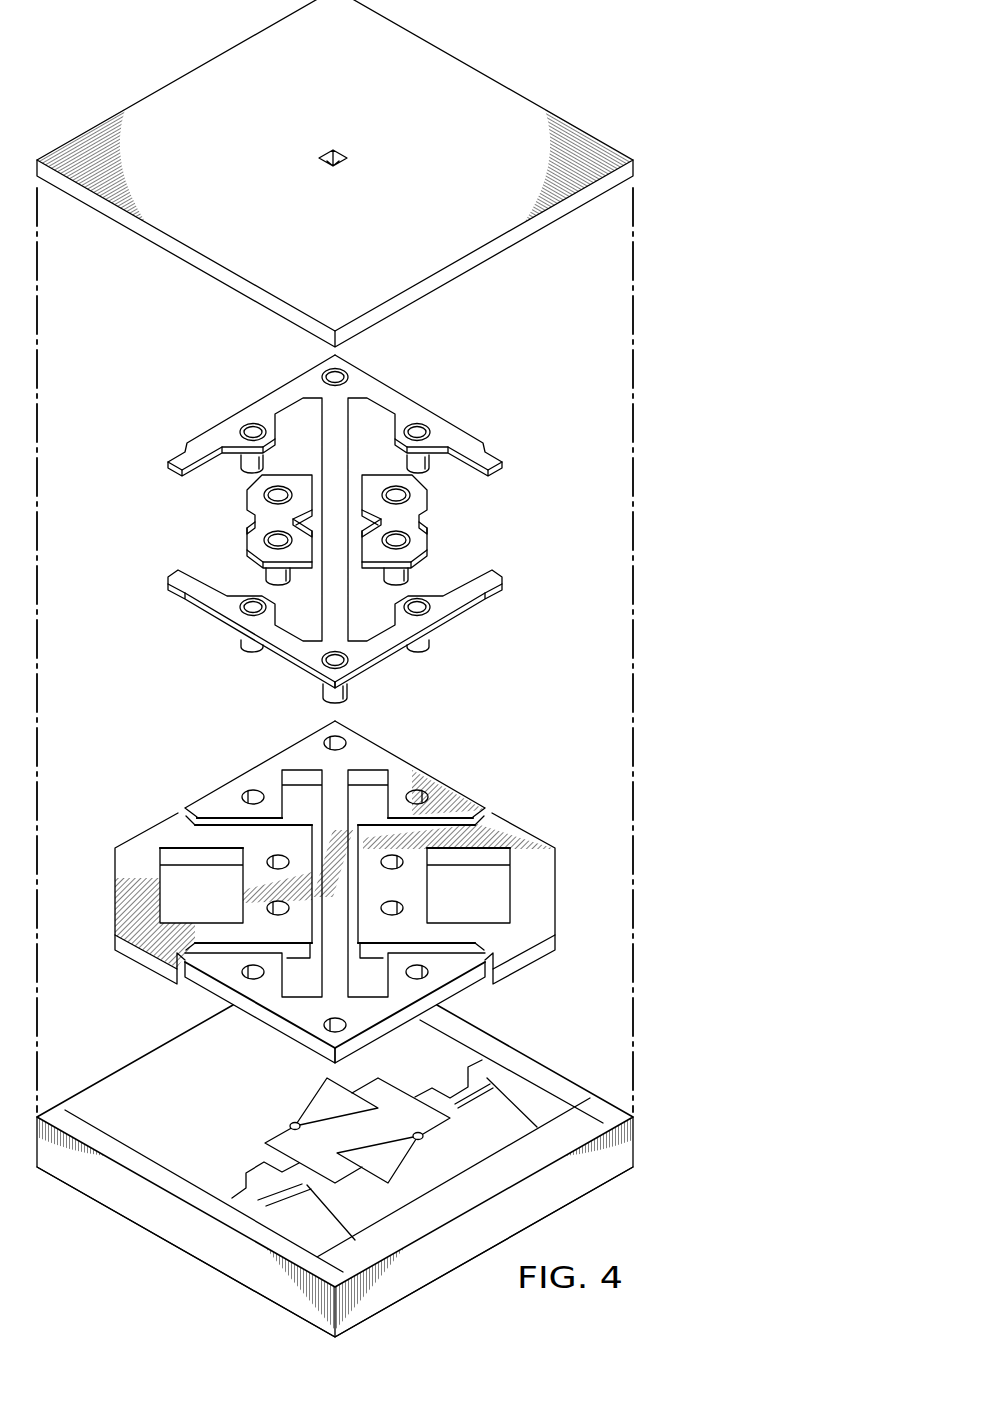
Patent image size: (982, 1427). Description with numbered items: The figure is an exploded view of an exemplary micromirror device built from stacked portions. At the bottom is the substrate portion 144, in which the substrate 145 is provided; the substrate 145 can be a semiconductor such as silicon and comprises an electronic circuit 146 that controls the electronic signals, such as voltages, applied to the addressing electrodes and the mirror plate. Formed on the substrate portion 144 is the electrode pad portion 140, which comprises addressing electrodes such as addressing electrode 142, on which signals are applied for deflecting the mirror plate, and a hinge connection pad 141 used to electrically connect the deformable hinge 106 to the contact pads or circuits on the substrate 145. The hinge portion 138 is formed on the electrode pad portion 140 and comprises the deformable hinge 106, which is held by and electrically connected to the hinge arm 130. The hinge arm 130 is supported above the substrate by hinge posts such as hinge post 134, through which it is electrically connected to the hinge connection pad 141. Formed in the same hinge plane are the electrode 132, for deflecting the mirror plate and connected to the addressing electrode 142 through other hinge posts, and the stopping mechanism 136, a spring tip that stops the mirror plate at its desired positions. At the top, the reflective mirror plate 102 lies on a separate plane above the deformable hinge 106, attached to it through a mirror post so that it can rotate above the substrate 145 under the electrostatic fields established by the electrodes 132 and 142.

The reflective mirror plate 102 is at (197, 77).
The hinge portion 138 is at (533, 22).
The hinge arm 130 is at (270, 401).
The electrode 132 is at (247, 500).
The hinge post 134 is at (323, 691).
The stopping mechanism 136 is at (468, 598).
The deformable hinge 106 is at (327, 621).
The electrode pad portion 140 is at (528, 805).
The hinge connection pad 141 is at (232, 791).
The addressing electrode 142 is at (148, 841).
The substrate portion 144 is at (529, 1034).
The substrate 145 is at (166, 1228).
The electronic circuit 146 is at (146, 1066).